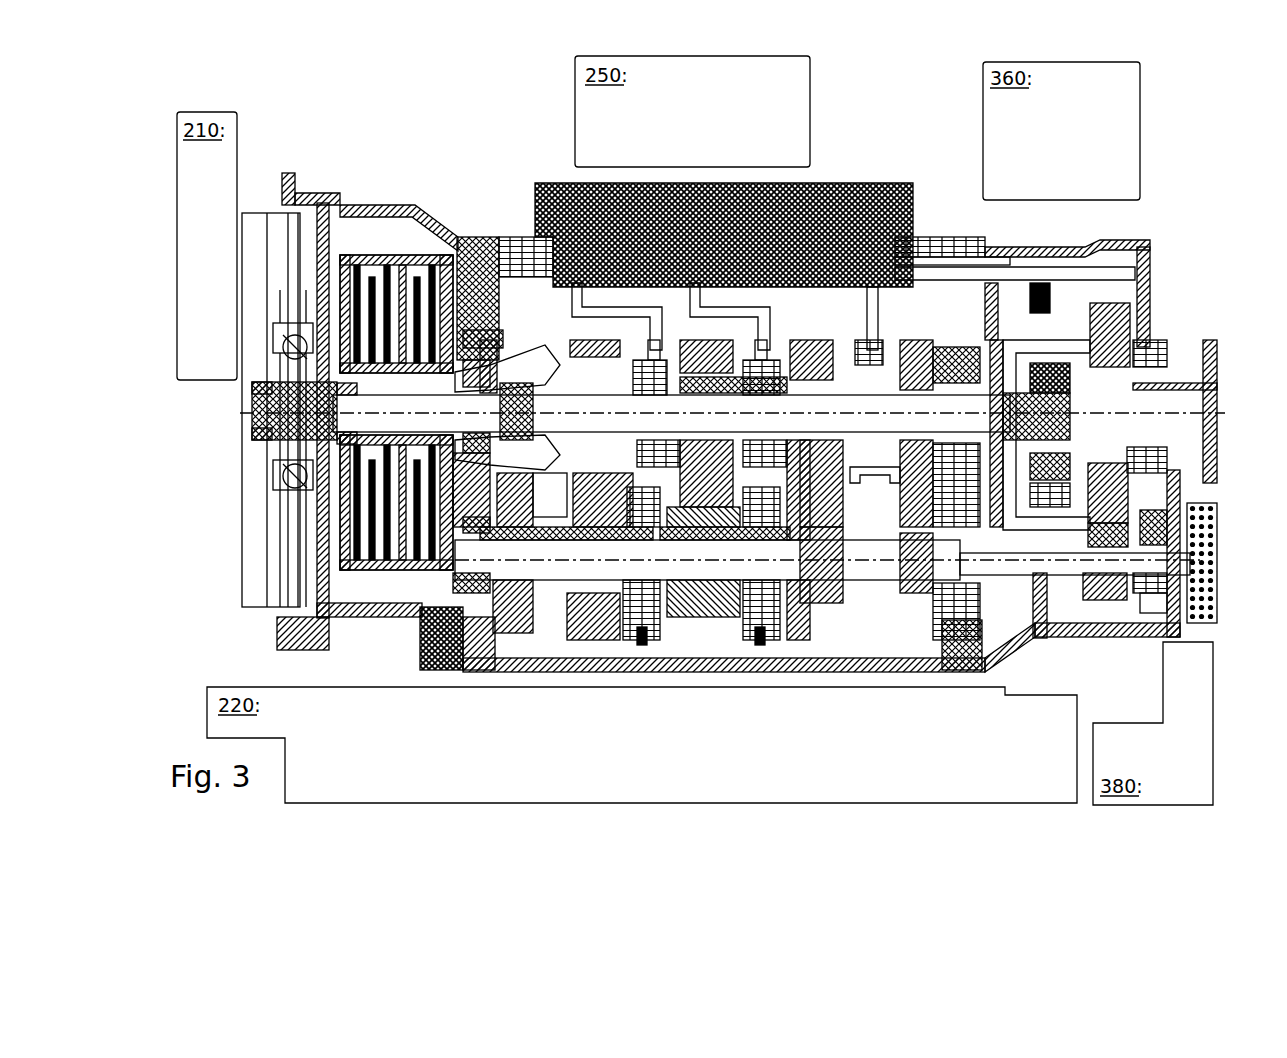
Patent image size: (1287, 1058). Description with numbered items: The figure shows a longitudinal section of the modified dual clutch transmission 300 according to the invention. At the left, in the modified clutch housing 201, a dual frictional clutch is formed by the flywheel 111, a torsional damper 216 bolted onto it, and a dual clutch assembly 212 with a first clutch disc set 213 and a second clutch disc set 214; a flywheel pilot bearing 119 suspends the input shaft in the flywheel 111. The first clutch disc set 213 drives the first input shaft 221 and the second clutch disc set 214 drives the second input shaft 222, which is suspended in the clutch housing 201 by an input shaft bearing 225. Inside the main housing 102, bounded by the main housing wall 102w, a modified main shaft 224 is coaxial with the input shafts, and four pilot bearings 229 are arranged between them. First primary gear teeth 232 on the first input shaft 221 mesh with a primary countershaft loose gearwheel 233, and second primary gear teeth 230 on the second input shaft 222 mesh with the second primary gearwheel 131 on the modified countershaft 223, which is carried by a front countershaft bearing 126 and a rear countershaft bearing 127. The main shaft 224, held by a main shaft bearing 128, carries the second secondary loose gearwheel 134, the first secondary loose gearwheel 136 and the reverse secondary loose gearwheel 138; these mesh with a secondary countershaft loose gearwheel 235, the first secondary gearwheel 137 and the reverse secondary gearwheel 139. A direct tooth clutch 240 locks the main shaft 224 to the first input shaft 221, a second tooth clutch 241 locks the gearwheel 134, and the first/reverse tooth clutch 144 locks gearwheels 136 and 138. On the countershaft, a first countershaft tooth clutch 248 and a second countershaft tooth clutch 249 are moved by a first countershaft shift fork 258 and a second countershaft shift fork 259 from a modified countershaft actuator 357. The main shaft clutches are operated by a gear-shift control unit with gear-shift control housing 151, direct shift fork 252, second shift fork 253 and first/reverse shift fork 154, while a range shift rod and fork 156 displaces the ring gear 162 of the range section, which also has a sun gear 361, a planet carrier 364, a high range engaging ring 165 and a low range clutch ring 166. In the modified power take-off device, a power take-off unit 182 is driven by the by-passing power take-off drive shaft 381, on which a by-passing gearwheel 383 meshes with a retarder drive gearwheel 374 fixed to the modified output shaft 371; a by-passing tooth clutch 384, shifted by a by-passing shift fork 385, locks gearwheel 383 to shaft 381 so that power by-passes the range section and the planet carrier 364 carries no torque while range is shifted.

The modified dual clutch transmission 300 is at (357, 105).
The modified clutch housing 201 is at (475, 230).
The flywheel 111 is at (257, 217).
The dual clutch assembly 212 is at (396, 248).
The first clutch disc set 213 is at (318, 342).
The second clutch disc set 214 is at (340, 340).
The torsional damper 216 is at (290, 352).
The flywheel pilot bearing 119 is at (247, 397).
The gear-shift control housing 151 is at (662, 180).
The direct shift fork 252 is at (620, 298).
The second shift fork 253 is at (738, 298).
The first/reverse shift fork 154 is at (812, 190).
The range shift rod and fork 156 is at (858, 305).
The main housing 102 is at (933, 263).
The main housing wall 102w is at (942, 232).
The ring gear 162 is at (1022, 285).
The planet carrier 364 is at (1115, 303).
The low range clutch ring 166 is at (1000, 303).
The high range engaging ring 165 is at (992, 305).
The sun gear 361 is at (1090, 300).
The modified retarder drive gearwheel 374 is at (1140, 330).
The modified output shaft 371 is at (1147, 440).
The modified countershaft actuator 357 is at (418, 651).
The first input shaft 221 is at (380, 555).
The second input shaft 222 is at (368, 560).
The input shaft bearing 225 is at (413, 555).
The second primary gear teeth 230 is at (470, 600).
The front countershaft bearing 126 is at (455, 590).
The second primary gearwheel 131 is at (500, 565).
The pilot bearings 229 is at (540, 405).
The modified main shaft 224 is at (598, 400).
The first primary gear teeth 232 is at (645, 640).
The primary countershaft loose gearwheel 233 is at (600, 640).
The direct tooth clutch 240 is at (700, 600).
The first countershaft tooth clutch 248 is at (662, 600).
The second secondary loose gearwheel 134 is at (715, 470).
The secondary countershaft loose gearwheel 235 is at (765, 640).
The second tooth clutch 241 is at (820, 500).
The second countershaft tooth clutch 249 is at (795, 600).
The first secondary loose gearwheel 136 is at (875, 480).
The first secondary gearwheel 137 is at (870, 580).
The first/reverse tooth clutch 144 is at (915, 520).
The reverse secondary gearwheel 139 is at (945, 580).
The reverse secondary loose gearwheel 138 is at (950, 600).
The rear countershaft bearing 127 is at (985, 645).
The main shaft bearing 128 is at (1030, 660).
The modified countershaft 223 is at (1050, 650).
The second countershaft shift fork 259 is at (1010, 652).
The first countershaft shift fork 258 is at (1040, 662).
The power take-off unit 182 is at (1200, 626).
The by-passing tooth clutch 384 is at (1150, 600).
The by-passing shift fork 385 is at (1155, 545).
The modified by-passing power take-off drive shaft 381 is at (1145, 613).
The by-passing gearwheel 383 is at (1160, 640).